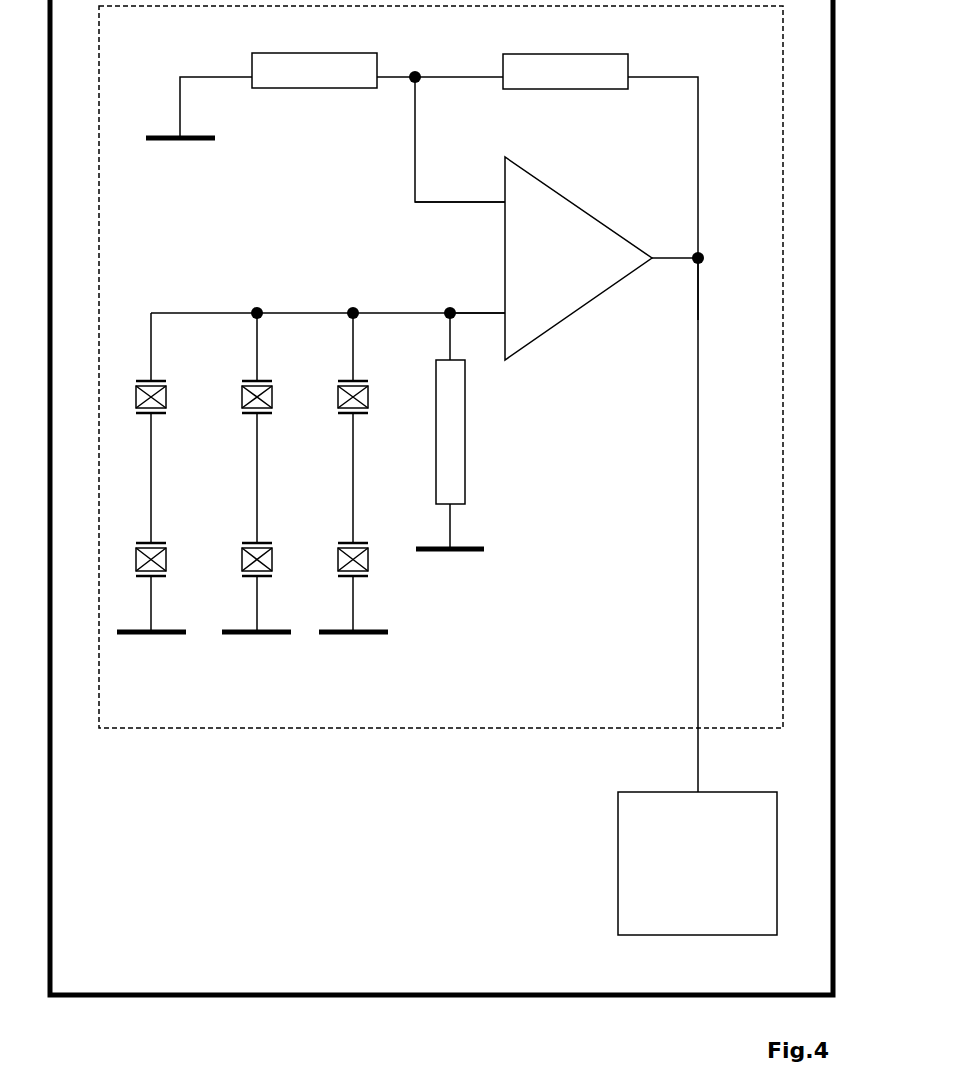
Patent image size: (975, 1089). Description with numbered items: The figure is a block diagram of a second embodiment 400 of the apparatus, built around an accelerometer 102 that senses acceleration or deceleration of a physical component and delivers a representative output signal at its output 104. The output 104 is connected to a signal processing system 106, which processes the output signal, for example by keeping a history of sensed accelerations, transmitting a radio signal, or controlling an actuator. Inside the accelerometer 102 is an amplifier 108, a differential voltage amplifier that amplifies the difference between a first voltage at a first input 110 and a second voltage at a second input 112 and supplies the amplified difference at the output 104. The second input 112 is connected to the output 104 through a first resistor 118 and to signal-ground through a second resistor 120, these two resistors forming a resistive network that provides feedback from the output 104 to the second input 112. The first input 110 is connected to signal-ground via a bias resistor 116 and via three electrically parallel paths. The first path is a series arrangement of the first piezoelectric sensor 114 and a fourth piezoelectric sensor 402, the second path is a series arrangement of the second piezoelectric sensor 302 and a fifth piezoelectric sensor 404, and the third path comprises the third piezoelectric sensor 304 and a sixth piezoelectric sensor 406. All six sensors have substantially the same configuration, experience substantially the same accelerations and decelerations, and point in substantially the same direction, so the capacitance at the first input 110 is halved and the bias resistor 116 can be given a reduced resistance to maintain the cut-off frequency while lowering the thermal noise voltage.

The second embodiment 400 is at (386, 1062).
The accelerometer 102 is at (325, 722).
The output 104 is at (703, 262).
The signal processing system 106 is at (703, 929).
The amplifier 108 is at (573, 305).
The first input 110 is at (487, 313).
The second input 112 is at (487, 202).
The first piezoelectric sensor 114 is at (160, 395).
The bias resistor 116 is at (456, 417).
The first resistor 118 is at (562, 80).
The second resistor 120 is at (278, 82).
The second piezoelectric sensor 302 is at (266, 395).
The third piezoelectric sensor 304 is at (362, 395).
The fourth piezoelectric sensor 402 is at (160, 557).
The fifth piezoelectric sensor 404 is at (266, 557).
The sixth piezoelectric sensor 406 is at (362, 557).